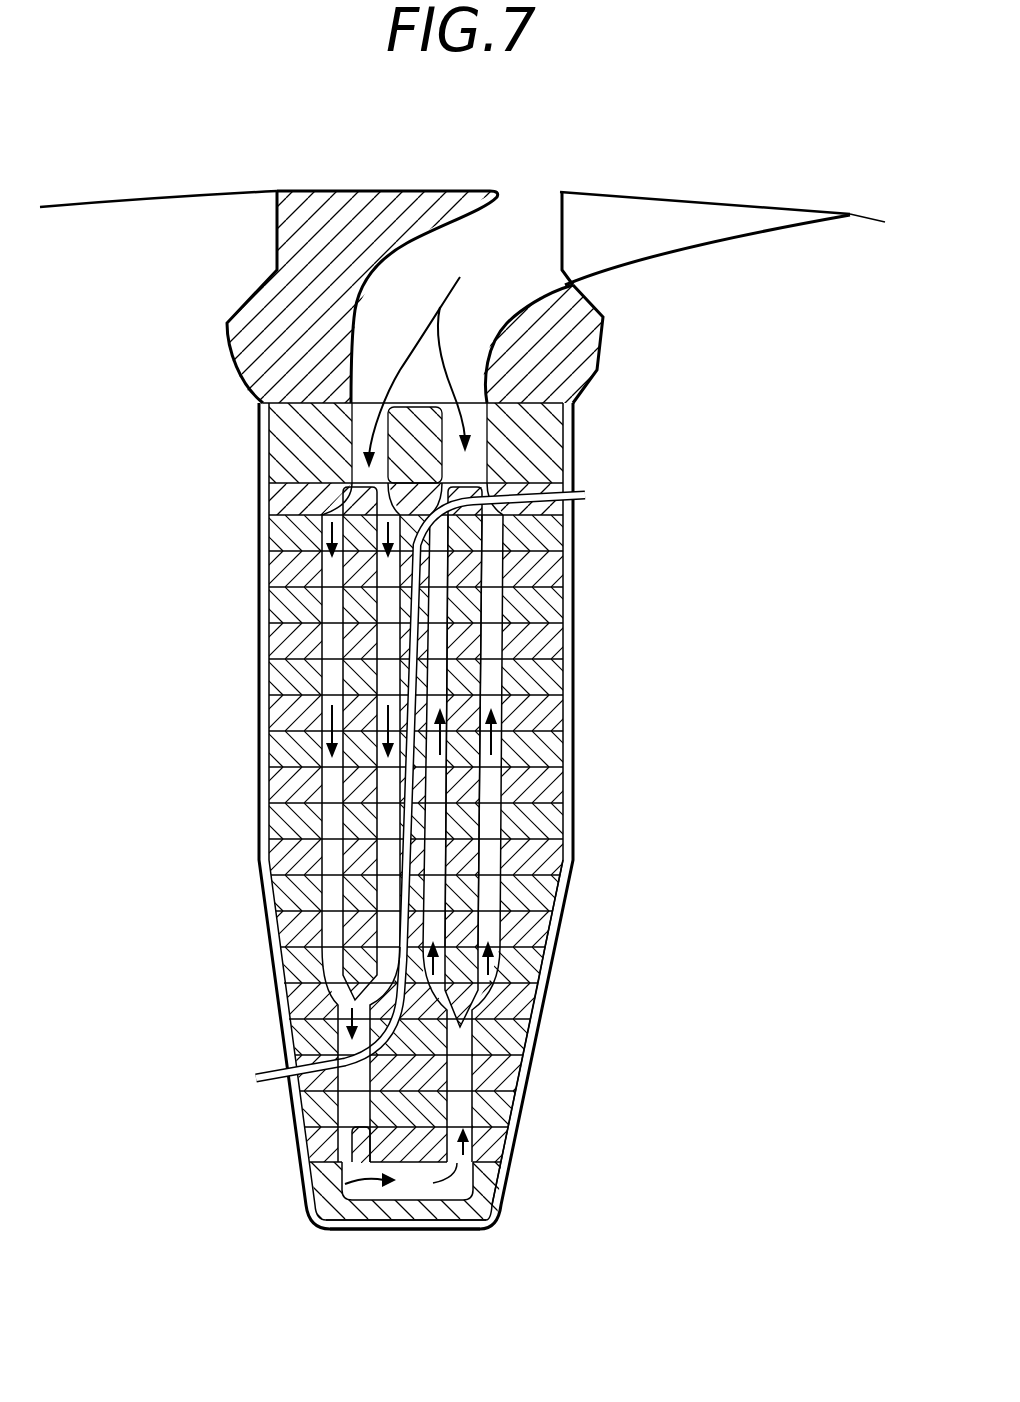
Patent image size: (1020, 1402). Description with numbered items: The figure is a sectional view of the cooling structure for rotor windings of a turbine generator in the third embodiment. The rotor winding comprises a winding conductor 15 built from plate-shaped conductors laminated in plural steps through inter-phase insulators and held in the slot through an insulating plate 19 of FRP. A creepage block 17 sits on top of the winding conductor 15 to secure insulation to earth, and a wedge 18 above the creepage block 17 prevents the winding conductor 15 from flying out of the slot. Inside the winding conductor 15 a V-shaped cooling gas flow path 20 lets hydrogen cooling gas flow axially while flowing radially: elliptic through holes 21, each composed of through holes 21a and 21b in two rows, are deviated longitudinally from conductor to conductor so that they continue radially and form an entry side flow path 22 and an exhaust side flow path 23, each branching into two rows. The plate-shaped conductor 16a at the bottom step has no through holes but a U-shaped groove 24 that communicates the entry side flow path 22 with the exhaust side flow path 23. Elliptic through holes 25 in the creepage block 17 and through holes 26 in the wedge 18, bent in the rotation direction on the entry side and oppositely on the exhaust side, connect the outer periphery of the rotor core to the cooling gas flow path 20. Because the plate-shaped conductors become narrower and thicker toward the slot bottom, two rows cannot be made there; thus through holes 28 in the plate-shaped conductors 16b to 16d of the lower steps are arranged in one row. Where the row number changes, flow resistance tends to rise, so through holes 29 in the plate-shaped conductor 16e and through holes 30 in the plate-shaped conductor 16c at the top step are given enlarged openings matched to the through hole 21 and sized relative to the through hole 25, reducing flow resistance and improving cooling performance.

The winding conductor 15 is at (573, 630).
The plate-shaped conductor at the bottom step 16a is at (515, 1213).
The plate-shaped conductor 16b is at (527, 1150).
The plate-shaped conductor at the top step 16c is at (573, 480).
The plate-shaped conductor 16d is at (535, 1043).
The plate-shaped conductor at the sixth step to the bottom step 16e is at (540, 1000).
The creepage block 17 is at (577, 413).
The wedge 18 is at (602, 331).
The insulating plate 19 is at (410, 1235).
The cooling gas flow path 20 is at (490, 808).
The through hole 21 is at (728, 797).
The through hole 21a is at (437, 853).
The through hole 21b is at (490, 866).
The entry side flow path 22 is at (330, 822).
The exhaust side flow path 23 is at (482, 772).
The U-shaped groove 24 is at (353, 1188).
The through hole 25 is at (293, 457).
The through hole 26 is at (383, 303).
The through hole 28 is at (347, 1110).
The through hole 29 is at (275, 1010).
The through hole 30 is at (328, 498).